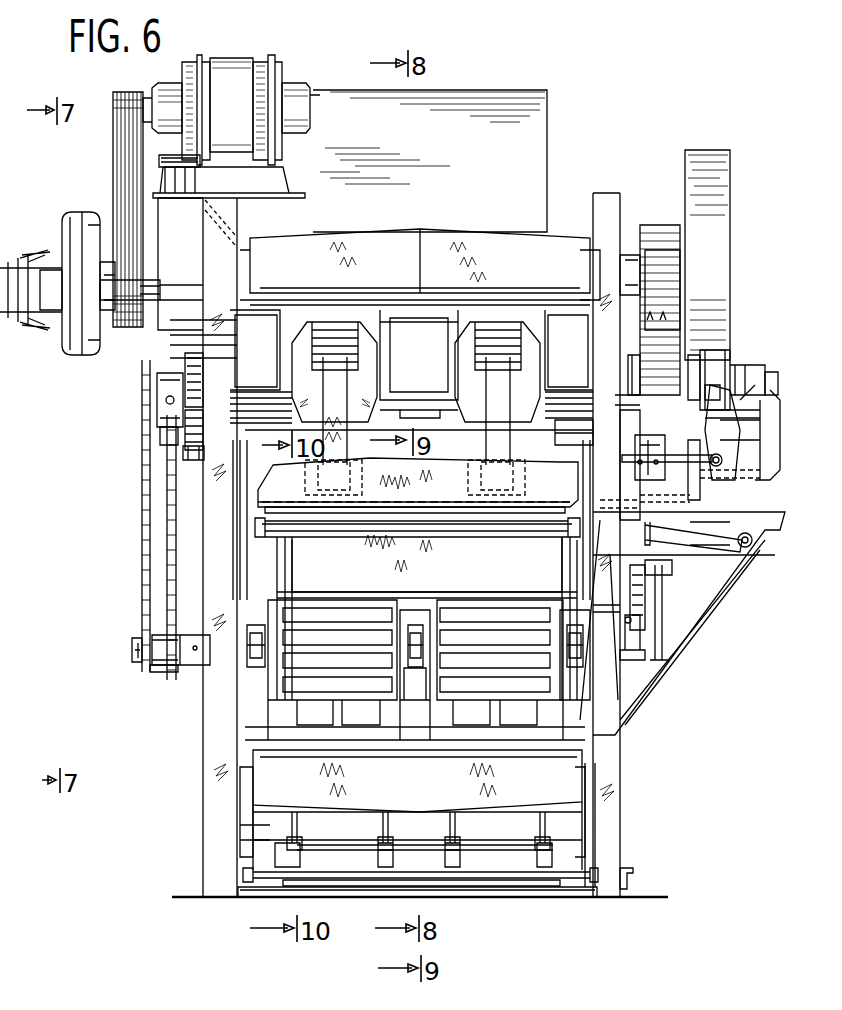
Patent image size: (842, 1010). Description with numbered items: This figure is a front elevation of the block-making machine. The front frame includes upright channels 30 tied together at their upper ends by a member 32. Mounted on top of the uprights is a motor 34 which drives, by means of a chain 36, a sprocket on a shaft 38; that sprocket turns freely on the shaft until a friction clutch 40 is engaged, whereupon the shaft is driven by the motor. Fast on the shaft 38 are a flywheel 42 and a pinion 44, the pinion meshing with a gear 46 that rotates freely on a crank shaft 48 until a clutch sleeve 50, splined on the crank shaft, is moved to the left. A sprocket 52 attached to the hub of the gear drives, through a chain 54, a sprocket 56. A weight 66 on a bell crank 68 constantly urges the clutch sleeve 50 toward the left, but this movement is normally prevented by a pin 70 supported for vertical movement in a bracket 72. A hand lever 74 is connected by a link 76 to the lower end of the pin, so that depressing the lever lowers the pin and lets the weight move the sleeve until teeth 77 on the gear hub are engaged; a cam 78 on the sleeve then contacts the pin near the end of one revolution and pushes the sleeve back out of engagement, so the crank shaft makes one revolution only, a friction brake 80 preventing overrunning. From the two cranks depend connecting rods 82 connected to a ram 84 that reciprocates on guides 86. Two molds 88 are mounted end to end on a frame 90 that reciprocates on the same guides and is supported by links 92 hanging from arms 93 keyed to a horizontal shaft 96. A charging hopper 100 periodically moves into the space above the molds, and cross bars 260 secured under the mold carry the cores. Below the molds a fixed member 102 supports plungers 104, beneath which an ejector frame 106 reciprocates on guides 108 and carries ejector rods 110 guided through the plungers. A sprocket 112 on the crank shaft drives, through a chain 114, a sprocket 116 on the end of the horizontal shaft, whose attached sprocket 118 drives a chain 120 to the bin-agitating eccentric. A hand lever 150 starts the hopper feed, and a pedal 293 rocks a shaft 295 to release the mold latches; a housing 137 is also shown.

The upright channels 30 is at (224, 712).
The member 32 is at (418, 252).
The motor 34 is at (233, 85).
The chain 36 is at (118, 163).
The shaft 38 is at (152, 300).
The friction clutch 40 is at (65, 325).
The flywheel 42 is at (715, 248).
The pinion 44 is at (660, 240).
The gear 46 is at (665, 335).
The crank shaft 48 is at (630, 380).
The clutch sleeve 50 is at (732, 362).
The sprocket 52 is at (605, 416).
The chain 54 is at (654, 458).
The sprocket 56 is at (650, 572).
The weight 66 is at (640, 502).
The bell crank 68 is at (760, 530).
The pin 70 is at (715, 420).
The bracket 72 is at (712, 545).
The hand lever 74 is at (670, 535).
The link 76 is at (753, 529).
The teeth 77 is at (695, 365).
The cam 78 is at (712, 388).
The friction brake 80 is at (195, 466).
The connecting rod 82 is at (340, 405).
The ram 84 is at (455, 483).
The guides 86 is at (411, 570).
The molds 88 is at (362, 638).
The frame 90 is at (416, 719).
The links 92 is at (406, 647).
The arms 93 is at (254, 628).
The horizontal shaft 96 is at (206, 632).
The hopper 100 is at (427, 563).
The fixed member 102 is at (442, 808).
The plungers 104 is at (362, 742).
The ejector frame 106 is at (345, 858).
The guides 108 is at (265, 832).
The ejector rods 110 is at (378, 830).
The sprocket 112 is at (157, 375).
The chain 114 is at (146, 532).
The sprocket 116 is at (155, 672).
The sprocket 118 is at (164, 674).
The chain 120 is at (172, 525).
The housing 137 is at (538, 172).
The hand lever 150 is at (640, 628).
The cross bars 260 is at (507, 710).
The pedal 293 is at (634, 871).
The shaft 295 is at (515, 880).